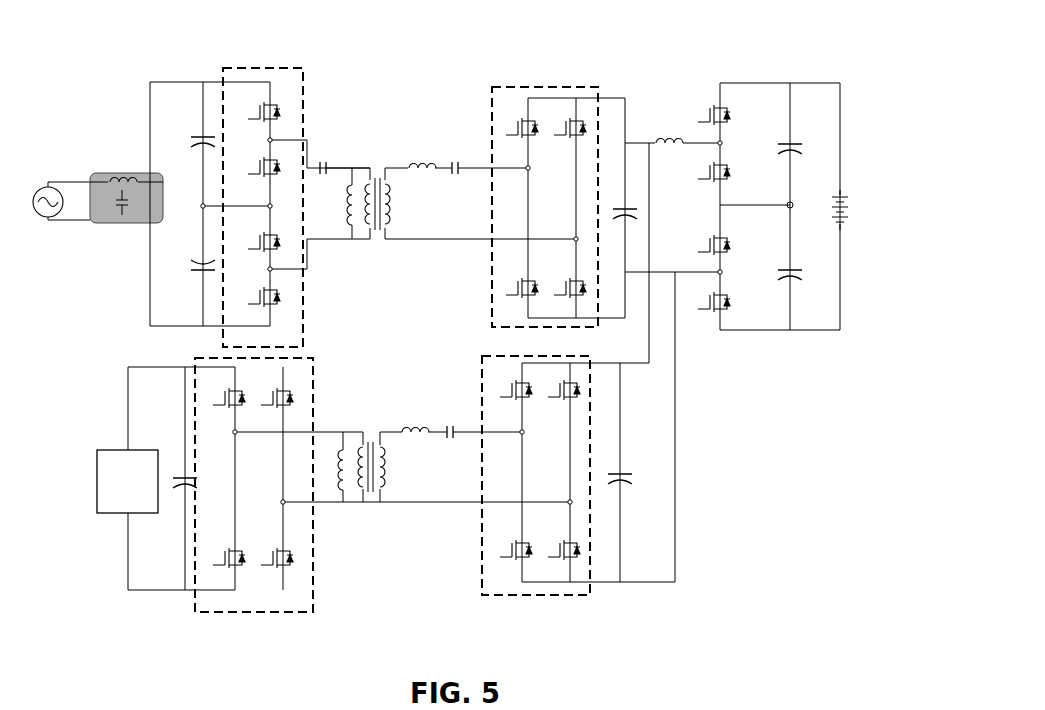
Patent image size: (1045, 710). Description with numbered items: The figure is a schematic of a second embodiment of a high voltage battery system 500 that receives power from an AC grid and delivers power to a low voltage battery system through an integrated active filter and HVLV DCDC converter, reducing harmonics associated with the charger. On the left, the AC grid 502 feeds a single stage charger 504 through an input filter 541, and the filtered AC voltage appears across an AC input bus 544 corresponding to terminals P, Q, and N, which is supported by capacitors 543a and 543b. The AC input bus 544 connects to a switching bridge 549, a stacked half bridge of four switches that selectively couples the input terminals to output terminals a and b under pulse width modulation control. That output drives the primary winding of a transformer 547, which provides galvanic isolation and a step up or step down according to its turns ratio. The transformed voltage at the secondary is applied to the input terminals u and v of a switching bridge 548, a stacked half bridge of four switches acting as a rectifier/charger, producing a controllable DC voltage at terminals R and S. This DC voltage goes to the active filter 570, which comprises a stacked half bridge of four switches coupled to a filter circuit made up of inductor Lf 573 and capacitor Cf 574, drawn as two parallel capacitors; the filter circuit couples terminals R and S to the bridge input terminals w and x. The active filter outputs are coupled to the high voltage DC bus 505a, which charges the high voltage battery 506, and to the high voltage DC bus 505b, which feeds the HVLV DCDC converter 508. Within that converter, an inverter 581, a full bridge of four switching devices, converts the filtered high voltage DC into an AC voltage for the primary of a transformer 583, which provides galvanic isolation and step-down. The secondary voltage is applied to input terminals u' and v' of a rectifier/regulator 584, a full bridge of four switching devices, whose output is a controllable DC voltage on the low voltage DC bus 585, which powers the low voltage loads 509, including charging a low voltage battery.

The high voltage battery system 500 is at (797, 427).
The AC grid 502 is at (41, 186).
The single stage charger 504 is at (79, 346).
The high voltage DC bus 505a is at (840, 80).
The high voltage DC bus 505b is at (678, 402).
The high voltage battery 506 is at (845, 195).
The HVLV DCDC converter 508 is at (118, 618).
The low voltage loads 509 is at (125, 450).
The input filter 541 is at (108, 172).
The capacitor 543a is at (196, 132).
The capacitor 543b is at (197, 273).
The AC input bus 544 is at (180, 78).
The transformer 547 is at (384, 166).
The switching bridge 548 is at (518, 86).
The switching bridge 549 is at (303, 106).
The active filter 570 is at (752, 74).
The inductor Lf 573 is at (655, 138).
The capacitor Cf 574 is at (634, 488).
The inverter 581 is at (572, 600).
The transformer 583 is at (374, 430).
The rectifier/regulator 584 is at (213, 618).
The low voltage DC bus 585 is at (171, 365).